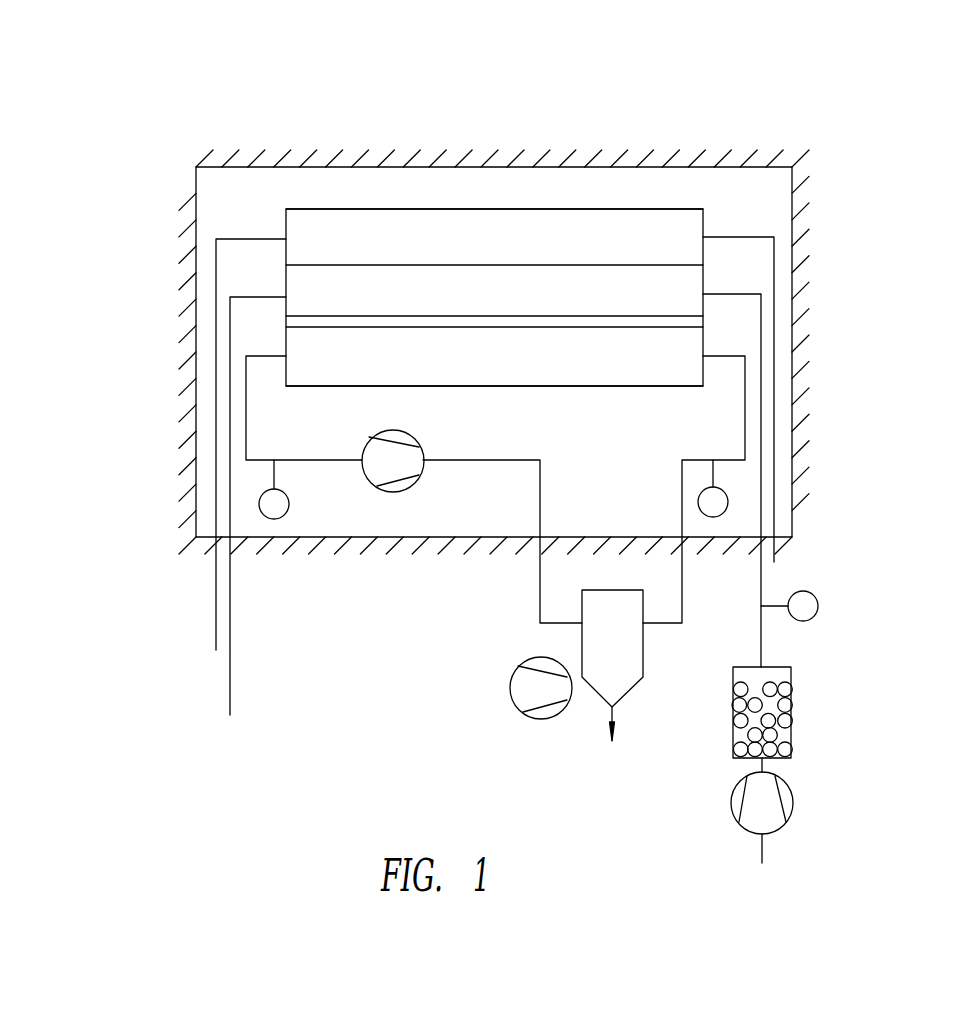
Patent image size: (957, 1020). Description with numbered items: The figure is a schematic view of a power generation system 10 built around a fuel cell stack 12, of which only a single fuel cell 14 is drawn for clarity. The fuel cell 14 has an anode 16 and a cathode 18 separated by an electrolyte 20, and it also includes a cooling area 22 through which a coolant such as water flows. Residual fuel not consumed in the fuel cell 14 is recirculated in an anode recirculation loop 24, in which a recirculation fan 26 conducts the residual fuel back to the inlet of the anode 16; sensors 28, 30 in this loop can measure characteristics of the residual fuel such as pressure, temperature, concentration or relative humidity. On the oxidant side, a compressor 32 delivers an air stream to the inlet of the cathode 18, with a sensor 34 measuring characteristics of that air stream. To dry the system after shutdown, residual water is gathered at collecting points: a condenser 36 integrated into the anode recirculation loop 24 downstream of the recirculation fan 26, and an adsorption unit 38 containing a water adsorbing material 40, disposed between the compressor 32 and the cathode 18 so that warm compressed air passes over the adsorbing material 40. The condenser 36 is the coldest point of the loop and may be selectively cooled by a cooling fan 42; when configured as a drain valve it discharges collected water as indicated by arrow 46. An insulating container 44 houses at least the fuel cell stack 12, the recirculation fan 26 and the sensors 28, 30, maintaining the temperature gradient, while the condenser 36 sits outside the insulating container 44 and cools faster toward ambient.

The power generation system 10 is at (812, 104).
The fuel cell stack 12 is at (634, 200).
The fuel cell 14 is at (525, 209).
The anode 16 is at (568, 372).
The cathode 18 is at (335, 293).
The electrolyte 20 is at (647, 328).
The cooling area 22 is at (311, 237).
The anode recirculation loop 24 is at (246, 410).
The recirculation fan 26 is at (415, 440).
The sensor 28 is at (289, 504).
The sensor 30 is at (700, 492).
The compressor 32 is at (731, 805).
The sensor 34 is at (818, 606).
The condenser 36 is at (582, 635).
The adsorption unit 38 is at (728, 751).
The water adsorbing material 40 is at (777, 733).
The cooling fan 42 is at (510, 690).
The insulating container 44 is at (793, 252).
The arrow 46 is at (613, 717).